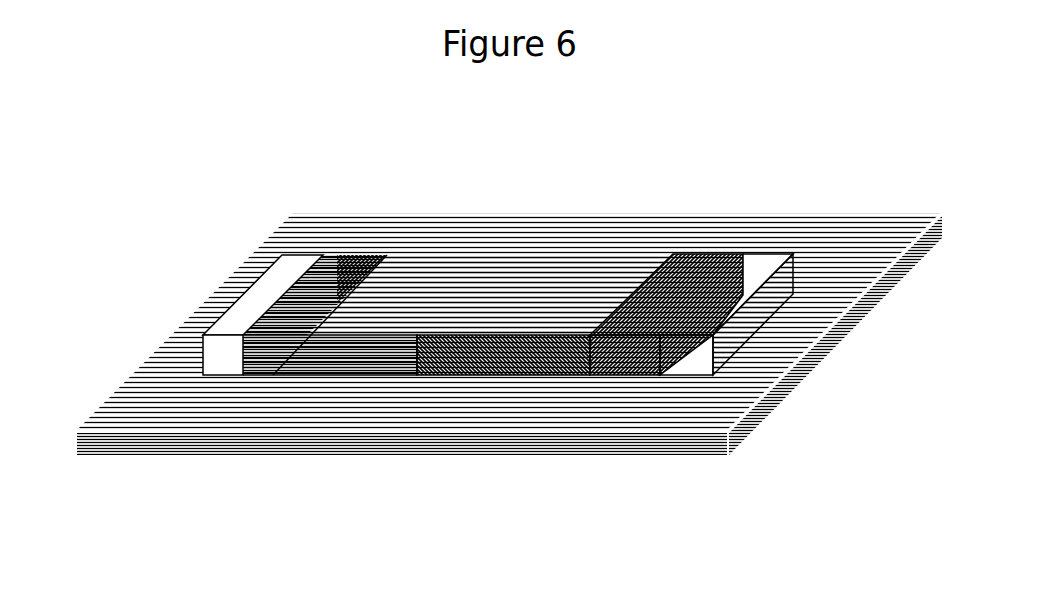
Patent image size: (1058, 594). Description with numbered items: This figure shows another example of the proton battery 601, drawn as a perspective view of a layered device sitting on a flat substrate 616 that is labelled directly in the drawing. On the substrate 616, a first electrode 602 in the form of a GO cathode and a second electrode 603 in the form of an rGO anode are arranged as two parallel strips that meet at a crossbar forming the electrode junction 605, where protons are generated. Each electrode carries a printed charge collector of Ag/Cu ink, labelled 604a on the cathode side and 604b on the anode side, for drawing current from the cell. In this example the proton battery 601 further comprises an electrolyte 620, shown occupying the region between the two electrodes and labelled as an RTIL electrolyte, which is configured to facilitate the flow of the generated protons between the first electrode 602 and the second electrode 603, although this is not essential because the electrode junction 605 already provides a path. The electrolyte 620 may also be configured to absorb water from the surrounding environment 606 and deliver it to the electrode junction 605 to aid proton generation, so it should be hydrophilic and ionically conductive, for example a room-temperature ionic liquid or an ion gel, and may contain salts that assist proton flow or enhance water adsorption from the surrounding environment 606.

The proton battery 601 is at (414, 480).
The first electrode 602 is at (317, 312).
The second electrode 603 is at (692, 253).
The printed charge collector (Ag/Cu inks) 604a is at (287, 285).
The printed charge collector 604b is at (752, 315).
The electrode junction 605 is at (450, 358).
The surrounding environment 606 is at (835, 283).
The substrate 616 is at (508, 334).
The electrolyte 620 is at (472, 275).